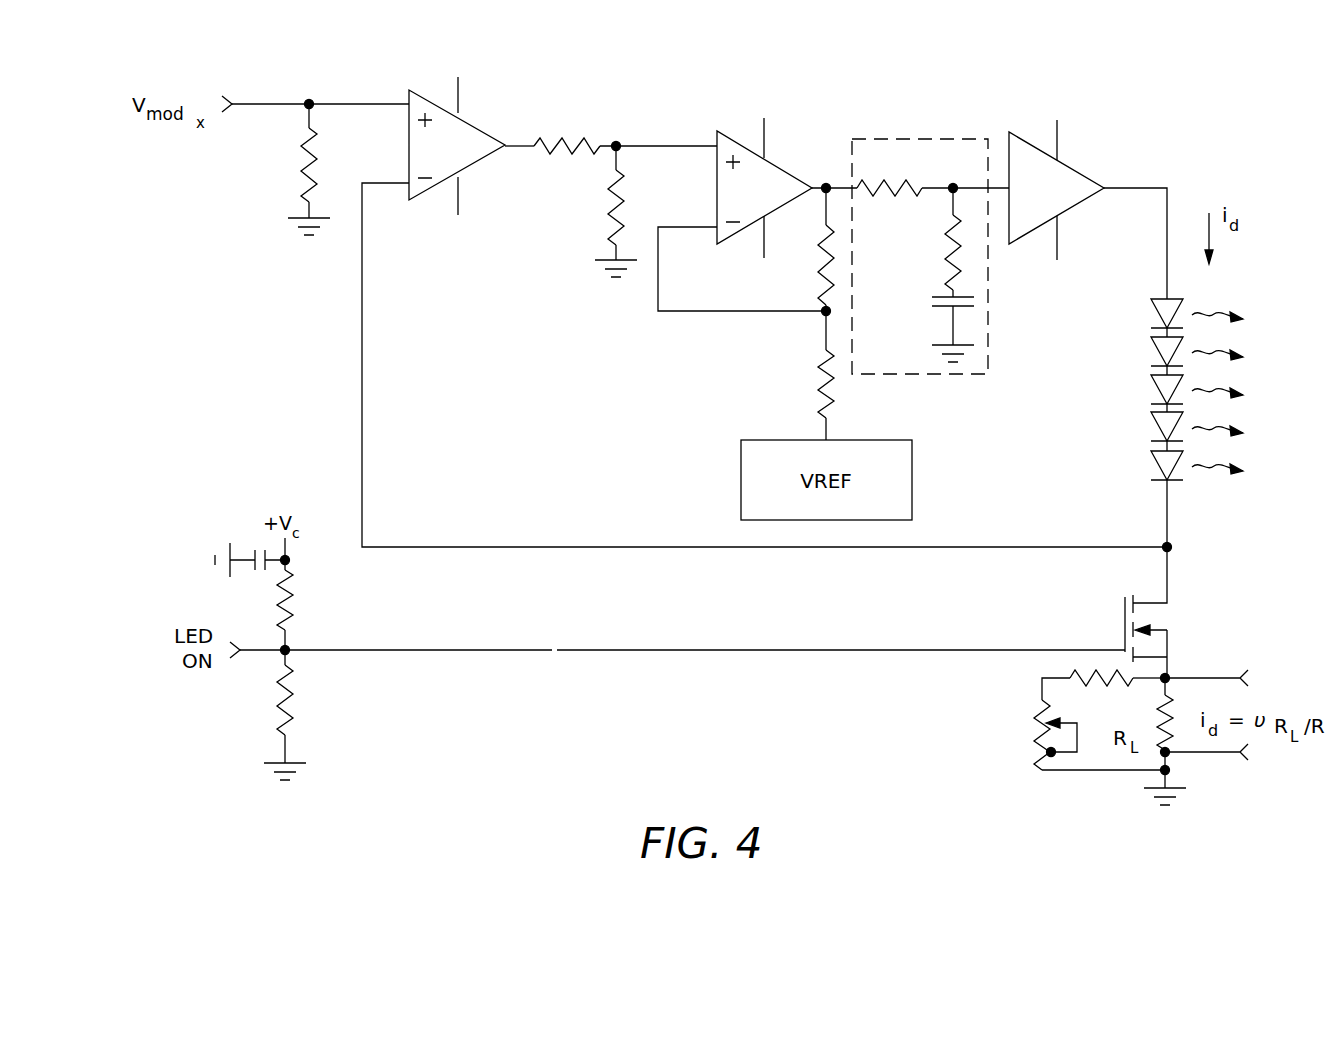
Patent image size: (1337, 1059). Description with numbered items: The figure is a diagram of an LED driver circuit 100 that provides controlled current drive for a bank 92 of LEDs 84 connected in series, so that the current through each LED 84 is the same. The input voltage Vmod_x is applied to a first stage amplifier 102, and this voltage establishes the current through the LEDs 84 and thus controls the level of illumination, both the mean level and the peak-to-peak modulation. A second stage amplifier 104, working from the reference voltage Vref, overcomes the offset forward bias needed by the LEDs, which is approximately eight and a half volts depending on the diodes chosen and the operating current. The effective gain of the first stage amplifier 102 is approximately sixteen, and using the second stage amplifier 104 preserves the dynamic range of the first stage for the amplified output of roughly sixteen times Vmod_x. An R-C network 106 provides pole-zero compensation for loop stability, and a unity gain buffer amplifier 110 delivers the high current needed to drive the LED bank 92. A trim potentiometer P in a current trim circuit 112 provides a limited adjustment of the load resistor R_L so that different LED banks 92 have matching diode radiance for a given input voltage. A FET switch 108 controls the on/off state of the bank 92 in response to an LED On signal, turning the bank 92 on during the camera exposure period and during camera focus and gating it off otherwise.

The LED driver circuit 100 is at (525, 665).
The first stage amplifier 102 is at (512, 64).
The second stage amplifier 104 is at (811, 133).
The R-C network 106 is at (922, 138).
The unity gain buffer amplifier 110 is at (1098, 155).
The bank of LEDs 92 is at (1257, 305).
The LED 84 is at (1170, 483).
The FET switch 108 is at (1163, 618).
The current trim circuit 112 is at (1068, 776).